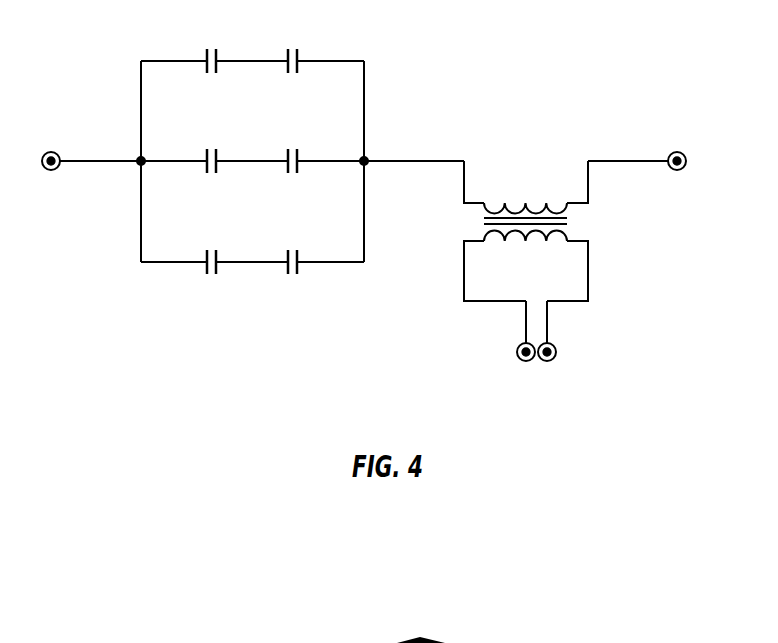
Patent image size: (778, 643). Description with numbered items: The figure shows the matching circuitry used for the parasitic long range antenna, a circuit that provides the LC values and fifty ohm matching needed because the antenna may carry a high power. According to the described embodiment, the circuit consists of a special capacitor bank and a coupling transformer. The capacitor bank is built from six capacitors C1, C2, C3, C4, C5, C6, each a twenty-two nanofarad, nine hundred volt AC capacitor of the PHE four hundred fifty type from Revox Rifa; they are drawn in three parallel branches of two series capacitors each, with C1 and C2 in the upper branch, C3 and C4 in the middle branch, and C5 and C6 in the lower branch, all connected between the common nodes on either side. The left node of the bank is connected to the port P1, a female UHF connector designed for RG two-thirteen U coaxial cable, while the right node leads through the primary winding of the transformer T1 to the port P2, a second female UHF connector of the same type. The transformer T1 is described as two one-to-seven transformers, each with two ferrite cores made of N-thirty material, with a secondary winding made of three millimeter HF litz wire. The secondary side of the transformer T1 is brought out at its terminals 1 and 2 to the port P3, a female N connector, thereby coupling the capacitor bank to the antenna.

The capacitor C1 is at (223, 59).
The capacitor C2 is at (302, 59).
The capacitor C3 is at (223, 160).
The capacitor C4 is at (302, 160).
The capacitor C5 is at (223, 262).
The capacitor C6 is at (302, 262).
The transformer T1 is at (526, 227).
The female UHF-connector P1 is at (52, 143).
The female UHF-connector P2 is at (639, 144).
The female N-connector P3 is at (531, 347).
The port P3 pin 1 is at (520, 331).
The port P3 pin 2 is at (543, 331).